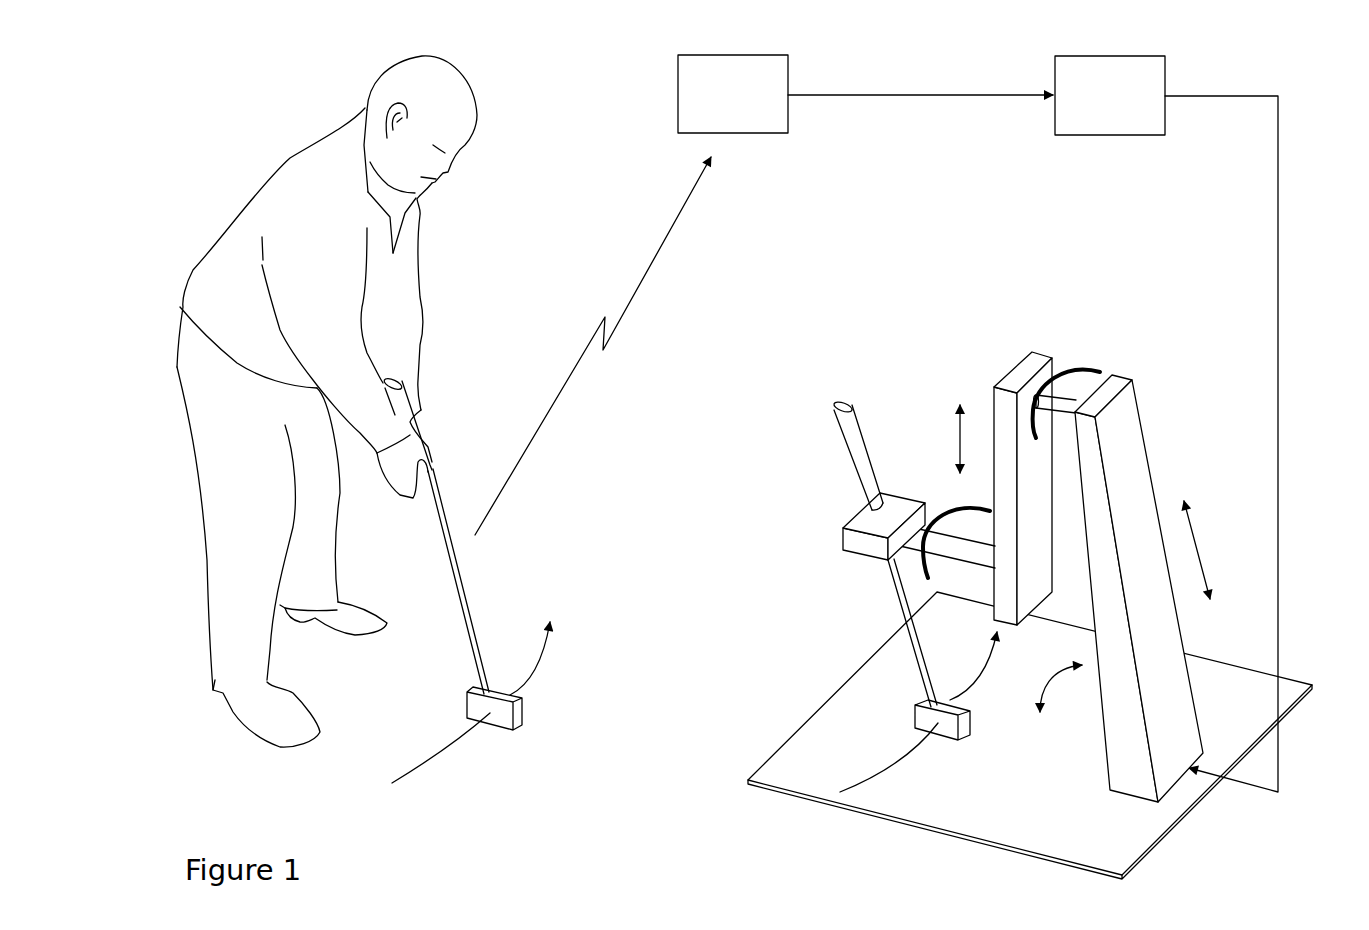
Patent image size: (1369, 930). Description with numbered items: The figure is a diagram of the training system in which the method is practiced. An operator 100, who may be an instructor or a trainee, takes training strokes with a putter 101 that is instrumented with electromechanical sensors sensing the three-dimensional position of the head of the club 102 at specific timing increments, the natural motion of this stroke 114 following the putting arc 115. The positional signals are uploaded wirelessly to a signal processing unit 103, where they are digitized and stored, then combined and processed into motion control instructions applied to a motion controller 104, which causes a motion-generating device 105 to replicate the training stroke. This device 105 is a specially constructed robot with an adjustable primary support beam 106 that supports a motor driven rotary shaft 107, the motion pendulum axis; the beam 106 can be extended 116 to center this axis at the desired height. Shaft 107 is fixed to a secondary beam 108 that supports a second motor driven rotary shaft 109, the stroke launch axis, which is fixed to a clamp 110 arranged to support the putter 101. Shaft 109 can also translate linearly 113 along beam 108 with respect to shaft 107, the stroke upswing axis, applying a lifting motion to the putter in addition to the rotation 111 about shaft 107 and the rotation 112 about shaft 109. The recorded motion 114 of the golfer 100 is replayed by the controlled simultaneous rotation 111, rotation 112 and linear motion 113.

The operator 100 is at (287, 147).
The putter 101 is at (478, 620).
The head of the club 102 is at (522, 715).
The signal processing unit 103 is at (678, 82).
The motion controller 104 is at (1165, 82).
The motion-generating device 105 is at (1070, 322).
The primary support beam 106 is at (1150, 457).
The rotary shaft (motion pendulum axis) 107 is at (1075, 397).
The secondary beam 108 is at (1025, 348).
The rotary shaft (stroke launch axis) 109 is at (928, 523).
The clamp 110 is at (835, 542).
The rotation (pendulum motion) 111 is at (1068, 400).
The rotation about shaft 109 112 is at (927, 550).
The linear translation (stroke upswing axis) 113 is at (955, 418).
The stroke (natural motion) 114 is at (457, 747).
The putting arc 115 is at (900, 763).
The extension of support beam 116 is at (1207, 550).